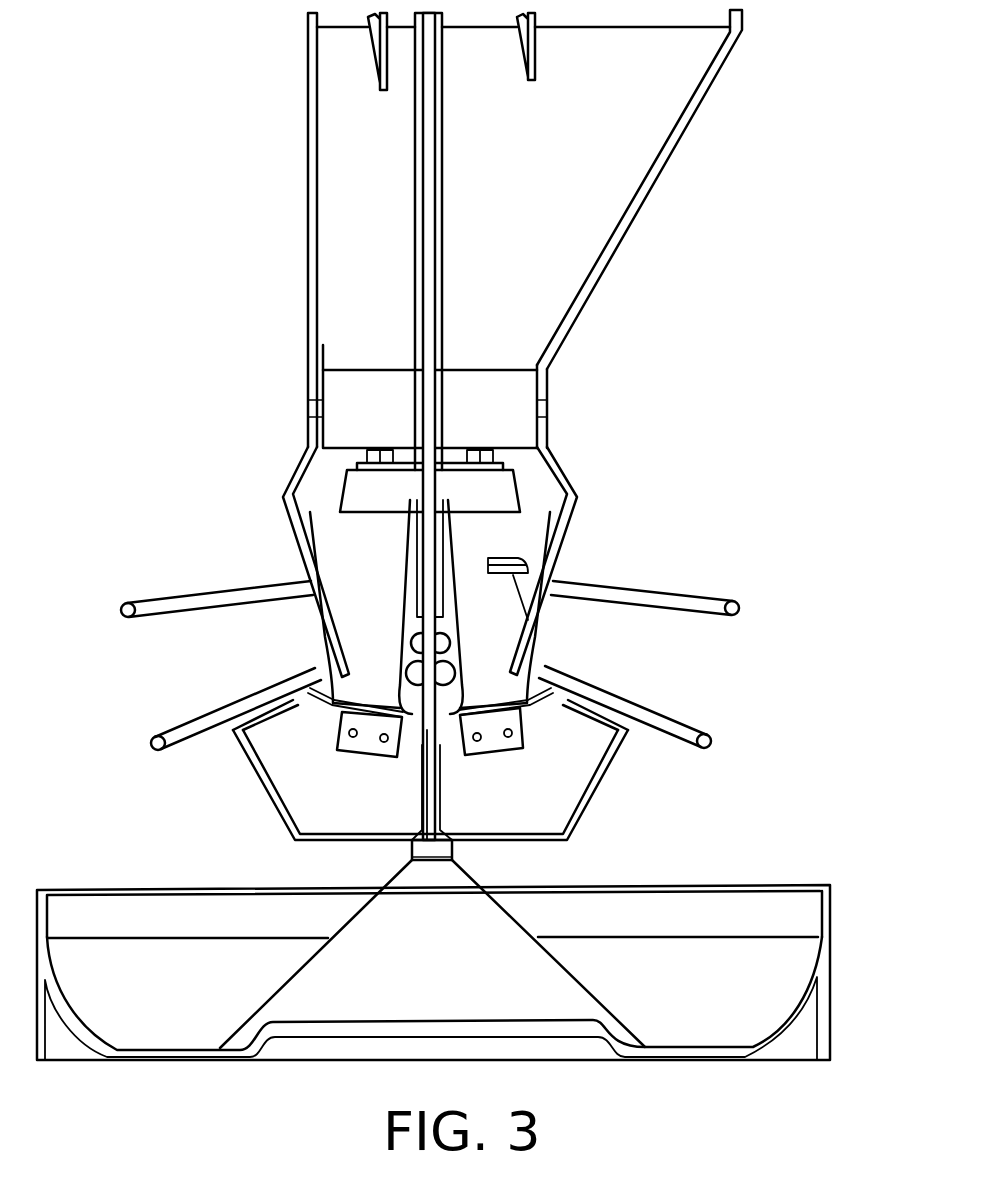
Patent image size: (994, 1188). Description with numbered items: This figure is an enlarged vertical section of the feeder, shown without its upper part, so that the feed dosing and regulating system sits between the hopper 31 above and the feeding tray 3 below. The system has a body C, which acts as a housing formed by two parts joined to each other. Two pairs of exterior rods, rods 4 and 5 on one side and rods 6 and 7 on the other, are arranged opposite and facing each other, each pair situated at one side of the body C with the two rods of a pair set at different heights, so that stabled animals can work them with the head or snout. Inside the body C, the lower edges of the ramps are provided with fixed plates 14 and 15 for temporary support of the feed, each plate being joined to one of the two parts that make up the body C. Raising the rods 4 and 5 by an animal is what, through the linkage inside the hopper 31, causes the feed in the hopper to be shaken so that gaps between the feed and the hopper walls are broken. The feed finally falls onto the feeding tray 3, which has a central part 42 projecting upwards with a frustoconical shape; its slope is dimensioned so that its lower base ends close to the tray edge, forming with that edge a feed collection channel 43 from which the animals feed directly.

The hopper 31 is at (660, 150).
The body C is at (583, 505).
The exterior rod 4 is at (697, 598).
The exterior rod 5 is at (685, 730).
The exterior rod 6 is at (157, 608).
The exterior rod 7 is at (183, 730).
The fixed plate 14 is at (525, 703).
The fixed plate 15 is at (330, 703).
The central part 42 is at (378, 920).
The feed collection channel 43 is at (687, 1013).
The feeding tray 3 is at (460, 972).